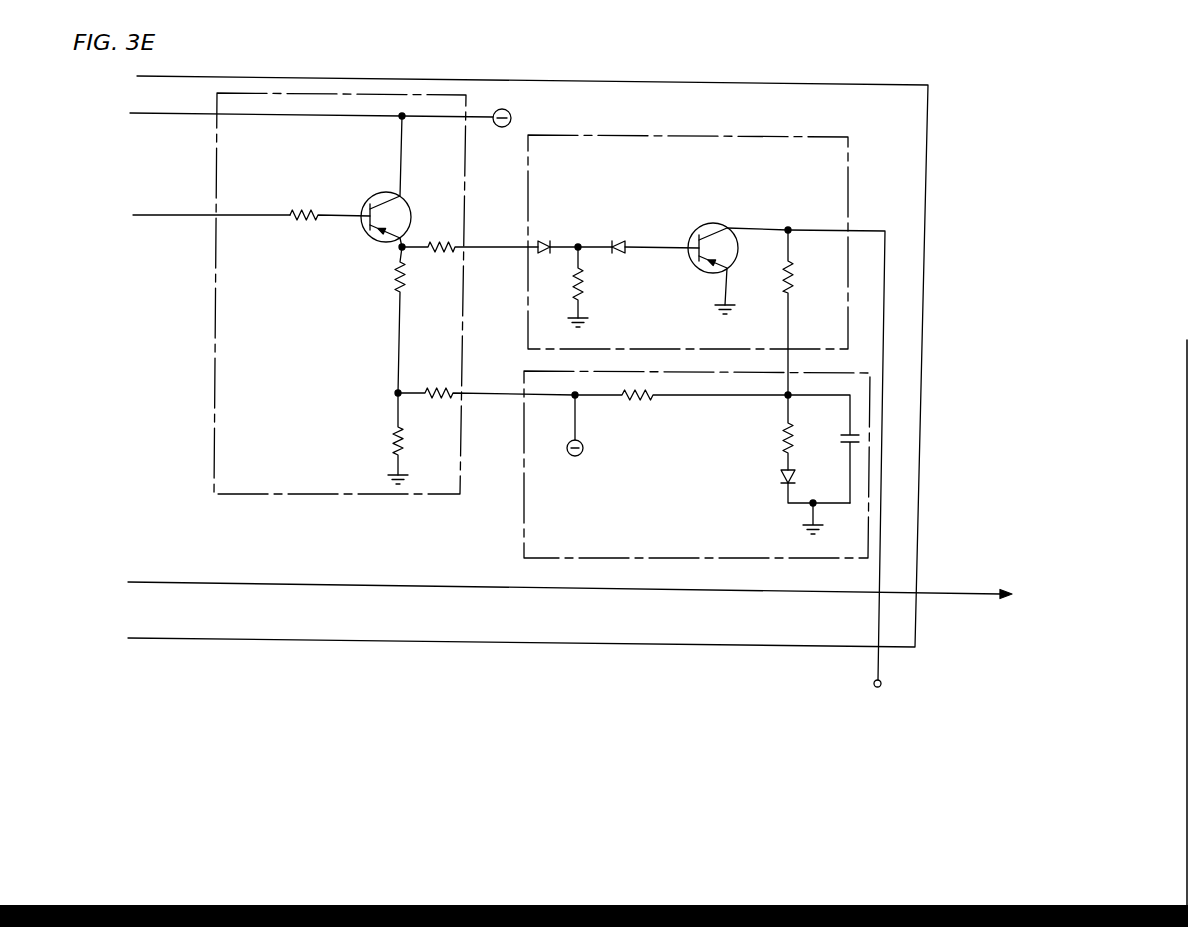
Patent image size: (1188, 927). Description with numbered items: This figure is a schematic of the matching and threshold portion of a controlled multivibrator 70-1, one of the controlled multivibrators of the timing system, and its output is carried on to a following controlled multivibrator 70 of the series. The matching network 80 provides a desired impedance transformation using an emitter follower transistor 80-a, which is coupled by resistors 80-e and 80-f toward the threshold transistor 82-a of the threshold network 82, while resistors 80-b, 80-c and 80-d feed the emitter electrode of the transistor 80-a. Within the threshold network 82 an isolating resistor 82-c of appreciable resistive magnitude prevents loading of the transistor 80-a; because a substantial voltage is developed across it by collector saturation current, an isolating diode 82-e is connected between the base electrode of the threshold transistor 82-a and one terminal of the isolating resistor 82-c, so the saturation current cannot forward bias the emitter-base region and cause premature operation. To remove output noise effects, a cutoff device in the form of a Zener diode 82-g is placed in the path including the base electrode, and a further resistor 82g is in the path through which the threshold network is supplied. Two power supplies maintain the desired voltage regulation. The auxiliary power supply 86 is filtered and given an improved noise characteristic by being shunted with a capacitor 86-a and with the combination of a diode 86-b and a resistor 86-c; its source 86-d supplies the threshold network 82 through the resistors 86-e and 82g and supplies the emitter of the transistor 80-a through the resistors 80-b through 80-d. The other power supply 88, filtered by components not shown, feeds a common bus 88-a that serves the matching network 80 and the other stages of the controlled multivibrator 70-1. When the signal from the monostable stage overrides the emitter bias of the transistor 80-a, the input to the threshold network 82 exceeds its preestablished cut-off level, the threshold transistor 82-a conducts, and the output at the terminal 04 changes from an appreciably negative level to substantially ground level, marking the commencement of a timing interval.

The matching network 80 is at (528, 349).
The controlled multivibrator 70-1 is at (928, 108).
The controlled multivibrator 70 is at (658, 598).
The common bus 88-a is at (203, 113).
The power supply 88 is at (508, 112).
The resistor 80-e is at (305, 207).
The emitter follower transistor 80-a is at (408, 204).
The resistor 80-f is at (440, 256).
The resistor 80-d is at (392, 280).
The resistor 80-b is at (441, 388).
The resistor 80-c is at (417, 438).
The threshold network 82 is at (848, 178).
The Zener diode 82-g is at (543, 243).
The isolating resistor 82-c is at (586, 296).
The isolating diode 82-e is at (616, 241).
The threshold transistor 82-a is at (742, 250).
The resistor 82g is at (796, 272).
The output terminal 04 is at (848, 462).
The power supply 86 is at (870, 392).
The source 86-d is at (575, 456).
The resistor 86-e is at (681, 411).
The resistor 86-c is at (778, 444).
The diode 86-b is at (776, 480).
The capacitor 86-a is at (845, 440).